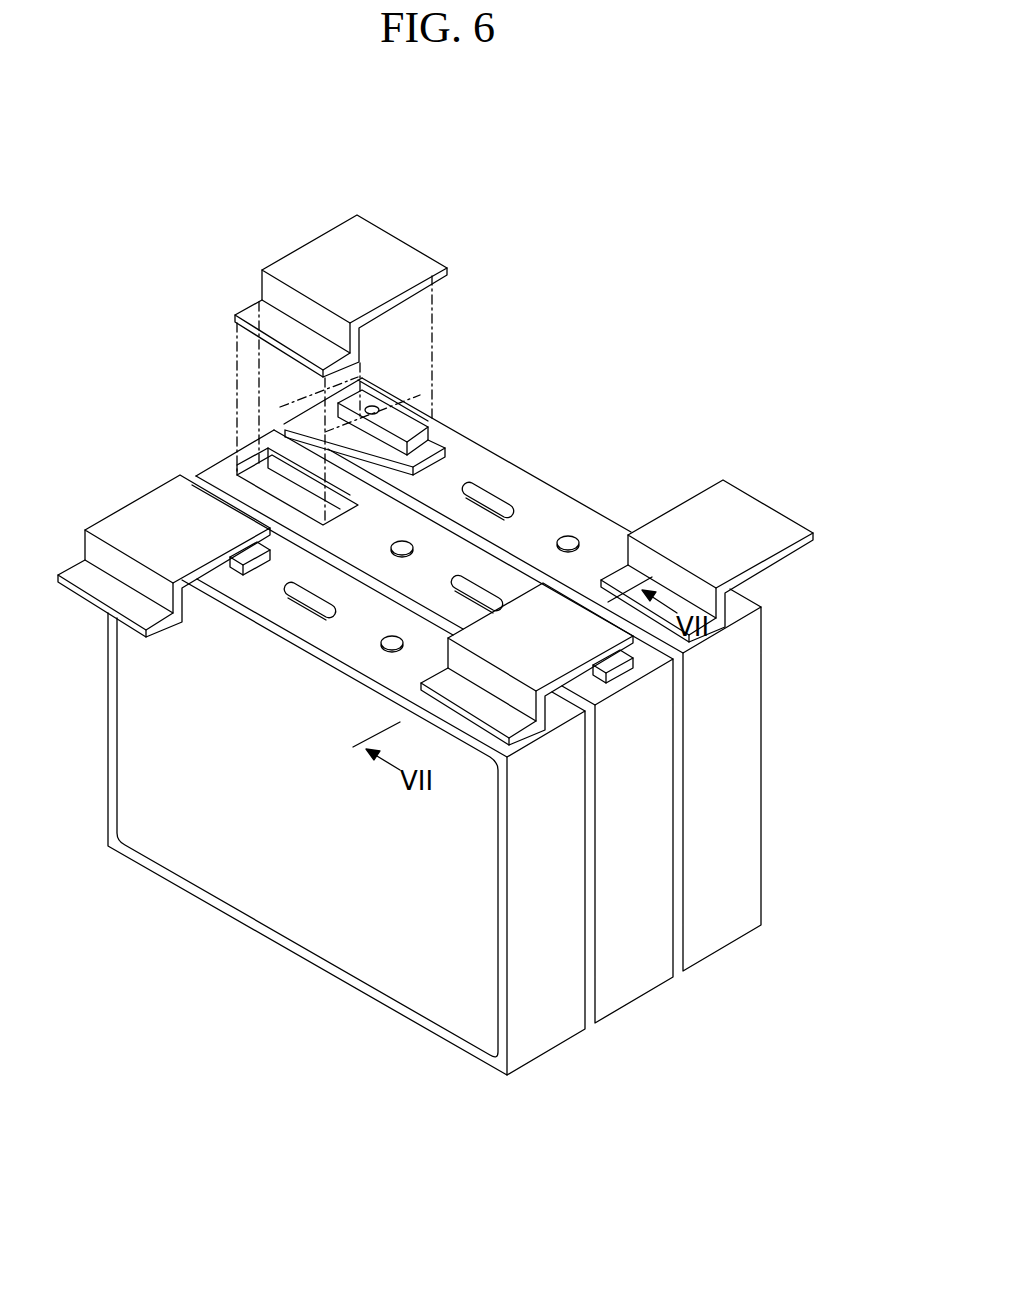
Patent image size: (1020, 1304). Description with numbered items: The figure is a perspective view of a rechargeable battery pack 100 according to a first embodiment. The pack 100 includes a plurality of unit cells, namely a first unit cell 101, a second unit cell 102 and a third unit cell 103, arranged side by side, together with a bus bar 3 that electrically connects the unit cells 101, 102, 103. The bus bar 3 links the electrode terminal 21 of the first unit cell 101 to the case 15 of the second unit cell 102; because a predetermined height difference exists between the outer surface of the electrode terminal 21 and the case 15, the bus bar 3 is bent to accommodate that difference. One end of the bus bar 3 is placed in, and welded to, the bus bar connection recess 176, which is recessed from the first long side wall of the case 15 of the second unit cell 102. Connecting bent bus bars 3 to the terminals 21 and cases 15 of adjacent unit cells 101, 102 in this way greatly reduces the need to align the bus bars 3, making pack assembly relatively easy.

The rechargeable battery pack 100 is at (606, 243).
The first unit cell 101 is at (551, 682).
The second unit cell 102 is at (439, 707).
The third unit cell 103 is at (552, 1033).
The bus bar 3 is at (377, 259).
The case 15 is at (218, 477).
The electrode terminal 21 is at (418, 411).
The bus bar connection recess 176 is at (254, 468).